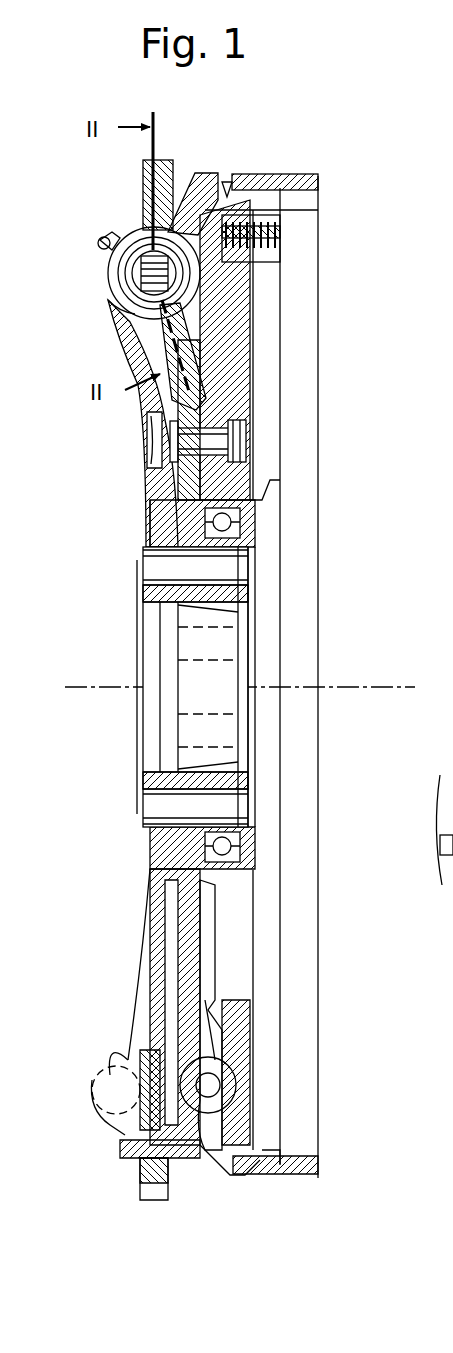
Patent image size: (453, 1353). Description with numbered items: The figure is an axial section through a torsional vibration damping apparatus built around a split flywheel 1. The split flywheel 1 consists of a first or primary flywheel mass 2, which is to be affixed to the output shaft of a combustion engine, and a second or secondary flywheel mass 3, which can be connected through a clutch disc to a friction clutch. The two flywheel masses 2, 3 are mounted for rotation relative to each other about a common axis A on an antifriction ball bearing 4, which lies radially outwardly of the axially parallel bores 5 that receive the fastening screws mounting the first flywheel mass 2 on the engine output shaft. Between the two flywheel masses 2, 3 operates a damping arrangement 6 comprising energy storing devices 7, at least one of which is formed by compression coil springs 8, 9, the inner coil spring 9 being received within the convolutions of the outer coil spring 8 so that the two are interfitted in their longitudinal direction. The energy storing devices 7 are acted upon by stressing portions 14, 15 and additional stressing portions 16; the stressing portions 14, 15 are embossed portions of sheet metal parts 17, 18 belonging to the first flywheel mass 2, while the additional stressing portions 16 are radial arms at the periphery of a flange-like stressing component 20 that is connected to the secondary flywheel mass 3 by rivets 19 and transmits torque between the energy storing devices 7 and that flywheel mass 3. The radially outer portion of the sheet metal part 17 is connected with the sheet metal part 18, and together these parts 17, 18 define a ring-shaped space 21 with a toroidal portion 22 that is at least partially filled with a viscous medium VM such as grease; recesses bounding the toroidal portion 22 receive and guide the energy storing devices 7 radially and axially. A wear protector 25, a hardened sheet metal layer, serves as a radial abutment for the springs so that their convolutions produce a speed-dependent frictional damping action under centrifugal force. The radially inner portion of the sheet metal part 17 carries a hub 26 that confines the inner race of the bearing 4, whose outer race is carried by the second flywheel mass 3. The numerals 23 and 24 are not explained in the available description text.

The split flywheel 1 is at (124, 748).
The first flywheel mass 2 is at (156, 516).
The second flywheel mass 3 is at (236, 386).
The antifriction ball bearing 4 is at (232, 522).
The bores 5 is at (222, 805).
The damping arrangement 6 is at (110, 268).
The energy storing devices 7 is at (124, 318).
The compression coil spring 8 is at (124, 286).
The compression coil spring 9 is at (137, 281).
The stressing portion 14 is at (132, 1110).
The stressing portion 15 is at (335, 1093).
The additional stressing portions 16 is at (146, 1072).
The sheet metal part 17 is at (148, 406).
The sheet metal part 18 is at (212, 1060).
The rivets 19 is at (236, 438).
The flange-like stressing component 20 is at (184, 936).
The ring-shaped space 21 is at (200, 262).
The toroidal portion 22 is at (205, 298).
The ring 23 is at (103, 238).
The spring 24 is at (282, 228).
The wear protector 25 is at (150, 246).
The hub 26 is at (240, 763).
The common axis A is at (106, 686).
The viscous medium VM is at (136, 1140).